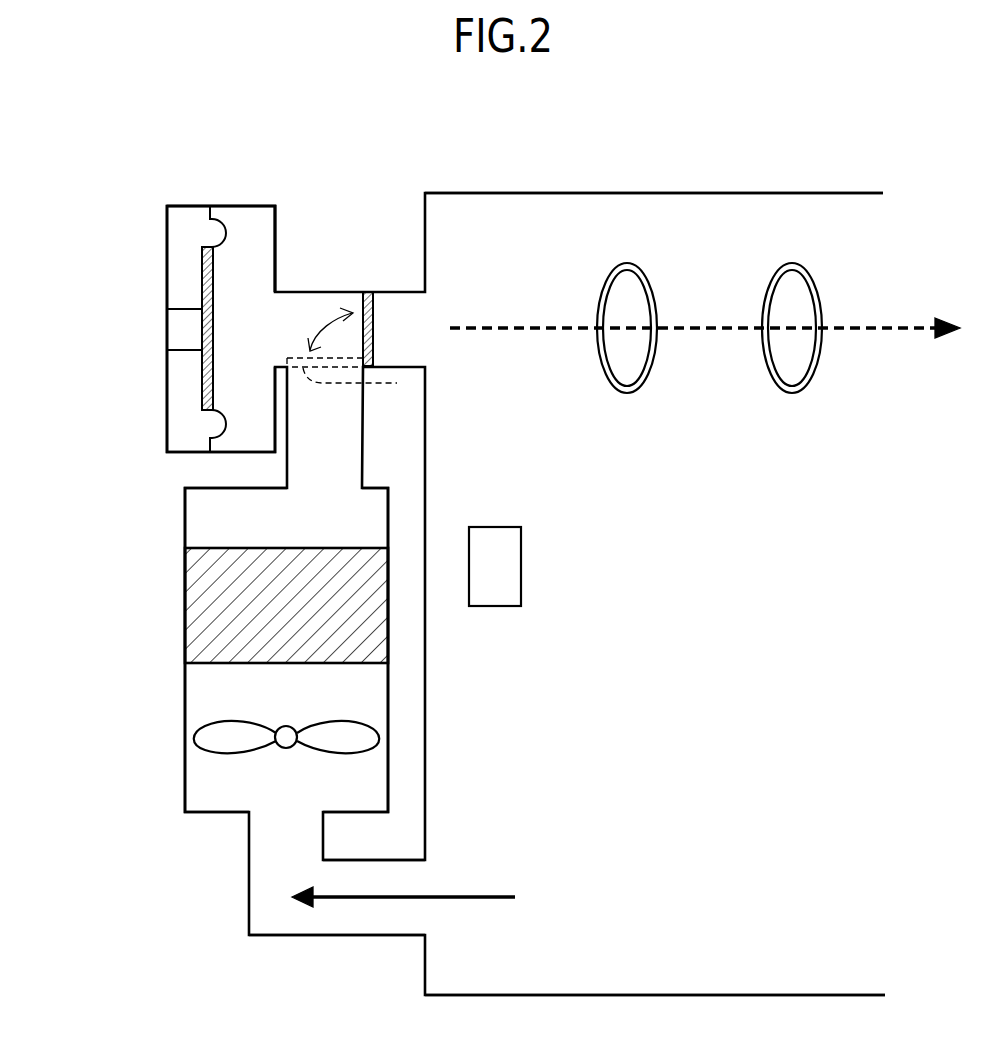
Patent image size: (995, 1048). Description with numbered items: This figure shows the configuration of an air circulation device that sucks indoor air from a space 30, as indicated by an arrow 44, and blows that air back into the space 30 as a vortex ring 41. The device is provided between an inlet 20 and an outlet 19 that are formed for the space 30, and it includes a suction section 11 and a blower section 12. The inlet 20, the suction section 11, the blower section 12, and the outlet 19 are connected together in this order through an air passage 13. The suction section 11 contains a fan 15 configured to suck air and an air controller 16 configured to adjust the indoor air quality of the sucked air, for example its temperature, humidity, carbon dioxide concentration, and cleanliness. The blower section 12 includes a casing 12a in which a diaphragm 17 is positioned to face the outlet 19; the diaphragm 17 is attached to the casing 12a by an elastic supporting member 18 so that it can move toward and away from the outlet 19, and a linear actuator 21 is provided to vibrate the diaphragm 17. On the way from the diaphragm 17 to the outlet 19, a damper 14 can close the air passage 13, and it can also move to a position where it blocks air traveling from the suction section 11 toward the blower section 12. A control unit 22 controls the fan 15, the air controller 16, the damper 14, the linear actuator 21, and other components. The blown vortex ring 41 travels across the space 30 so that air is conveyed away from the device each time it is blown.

The suction section 11 is at (167, 748).
The blower section 12 is at (143, 257).
The casing 12a is at (257, 205).
The air passage 13 is at (397, 292).
The damper 14 is at (375, 342).
The fan 15 is at (284, 723).
The air controller 16 is at (223, 548).
The diaphragm 17 is at (212, 263).
The elastic supporting member 18 is at (210, 217).
The outlet 19 is at (427, 333).
The inlet 20 is at (424, 883).
The linear actuator 21 is at (178, 330).
The control unit 22 is at (523, 565).
The space 30 is at (785, 190).
The vortex ring 41 is at (647, 373).
The arrow 44 is at (476, 900).